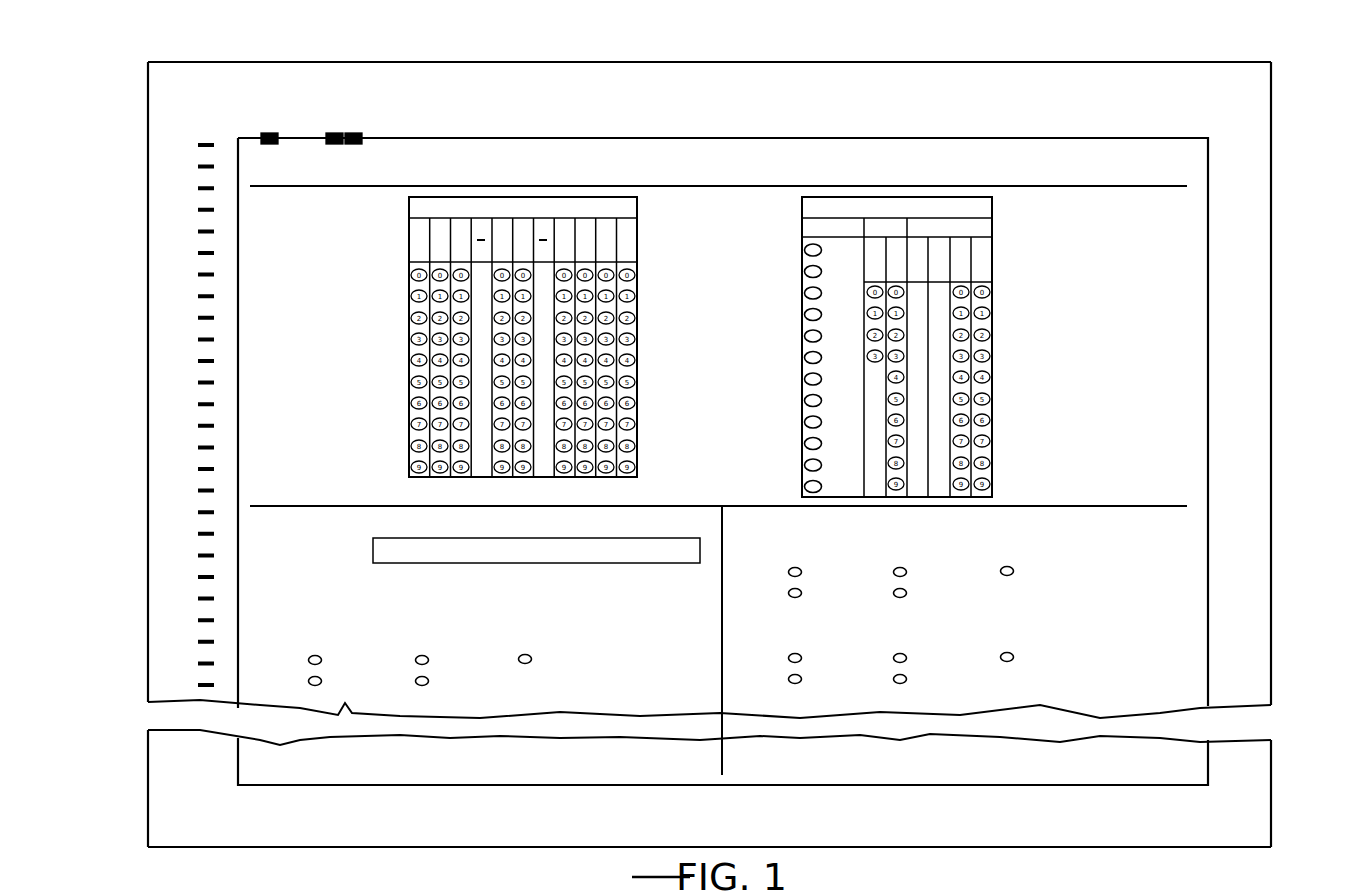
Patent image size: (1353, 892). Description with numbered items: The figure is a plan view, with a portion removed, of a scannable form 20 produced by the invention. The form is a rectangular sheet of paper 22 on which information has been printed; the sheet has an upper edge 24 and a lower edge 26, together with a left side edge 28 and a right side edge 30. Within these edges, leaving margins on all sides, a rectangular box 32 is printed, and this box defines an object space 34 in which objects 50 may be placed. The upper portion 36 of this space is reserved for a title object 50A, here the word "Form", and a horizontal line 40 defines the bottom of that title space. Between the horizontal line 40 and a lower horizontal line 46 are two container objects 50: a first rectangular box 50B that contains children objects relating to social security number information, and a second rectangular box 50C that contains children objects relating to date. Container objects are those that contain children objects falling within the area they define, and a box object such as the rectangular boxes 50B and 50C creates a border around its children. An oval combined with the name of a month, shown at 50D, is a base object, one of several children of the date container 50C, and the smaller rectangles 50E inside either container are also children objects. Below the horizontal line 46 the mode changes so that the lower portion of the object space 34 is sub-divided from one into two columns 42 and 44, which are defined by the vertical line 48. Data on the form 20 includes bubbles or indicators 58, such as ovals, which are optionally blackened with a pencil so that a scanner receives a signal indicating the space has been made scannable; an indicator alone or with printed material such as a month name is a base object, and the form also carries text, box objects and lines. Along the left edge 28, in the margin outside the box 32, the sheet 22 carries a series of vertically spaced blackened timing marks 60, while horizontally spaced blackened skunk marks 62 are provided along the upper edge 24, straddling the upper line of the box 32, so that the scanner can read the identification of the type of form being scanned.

The scannable form 20 is at (842, 53).
The rectangular sheet of paper 22 is at (150, 84).
The upper edge 24 is at (540, 60).
The lower edge 26 is at (1236, 847).
The left side edge 28 is at (148, 366).
The right side edge 30 is at (1272, 492).
The rectangular box 32 is at (1208, 203).
The object space 34 is at (1118, 313).
The upper portion of the object space 36 is at (1082, 177).
The horizontal line 40 is at (1140, 186).
The first column 42 is at (666, 613).
The second column 44 is at (1156, 619).
The horizontal line 46 is at (1083, 503).
The vertical line 48 is at (722, 628).
The objects 50 is at (373, 547).
The title object 50A is at (772, 162).
The rectangular box 50B is at (638, 283).
The rectangular box 50C is at (802, 302).
The oval in combination with month name 50D is at (822, 367).
The smaller rectangles 50E is at (627, 437).
The bubbles or indicators 58 is at (410, 392).
The timing marks 60 is at (199, 250).
The skunk marks 62 is at (270, 134).